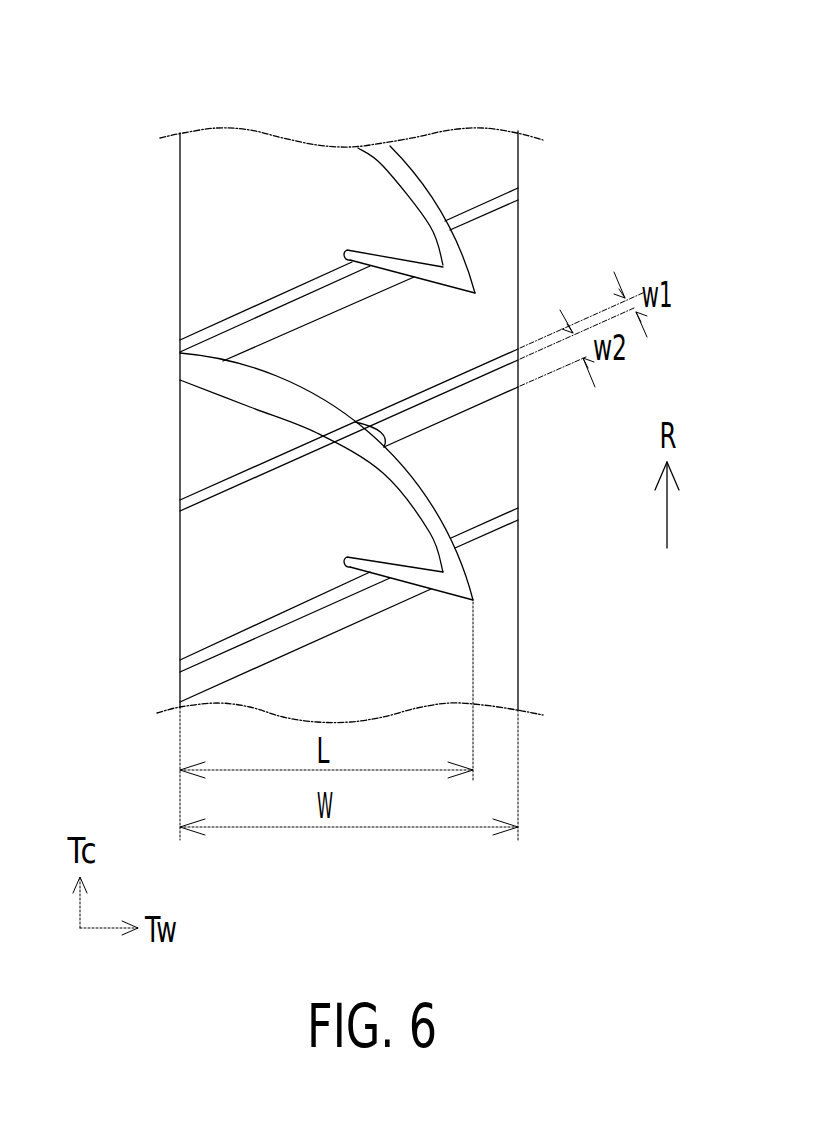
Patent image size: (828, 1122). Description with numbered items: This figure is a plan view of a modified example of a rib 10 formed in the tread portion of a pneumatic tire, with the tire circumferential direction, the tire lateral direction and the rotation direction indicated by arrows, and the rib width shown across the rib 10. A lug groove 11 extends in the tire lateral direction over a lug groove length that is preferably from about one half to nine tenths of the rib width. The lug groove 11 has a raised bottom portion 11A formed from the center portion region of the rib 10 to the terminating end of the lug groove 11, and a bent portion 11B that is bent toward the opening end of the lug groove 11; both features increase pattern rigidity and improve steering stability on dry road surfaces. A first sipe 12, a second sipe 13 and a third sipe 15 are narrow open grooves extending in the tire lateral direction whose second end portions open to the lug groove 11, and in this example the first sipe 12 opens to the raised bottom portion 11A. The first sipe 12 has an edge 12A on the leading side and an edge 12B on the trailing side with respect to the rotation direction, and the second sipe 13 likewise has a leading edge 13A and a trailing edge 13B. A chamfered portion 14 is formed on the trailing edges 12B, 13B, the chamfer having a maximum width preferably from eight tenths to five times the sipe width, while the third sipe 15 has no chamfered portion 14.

The rib 10 is at (517, 117).
The lug groove 11 is at (198, 368).
The raised bottom portion 11A is at (423, 508).
The bent portion 11B is at (456, 585).
The first sipe 12 is at (252, 637).
The edge on the leading side of the first sipe 12A is at (277, 623).
The edge on the trailing side of the first sipe 12B is at (296, 620).
The second sipe 13 is at (483, 367).
The edge on the leading side of the second sipe 13A is at (400, 404).
The edge on the trailing side of the second sipe 13B is at (436, 391).
The chamfered portion 14 is at (478, 395).
The third sipe 15 is at (250, 479).